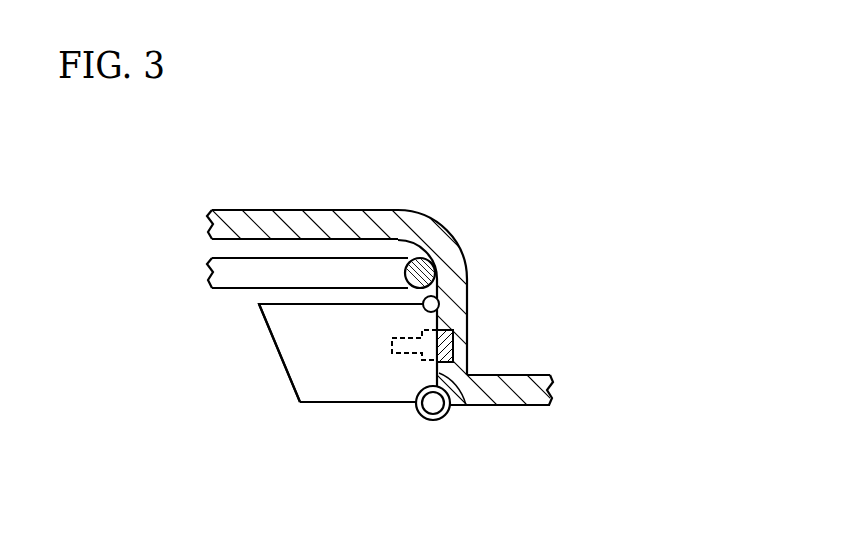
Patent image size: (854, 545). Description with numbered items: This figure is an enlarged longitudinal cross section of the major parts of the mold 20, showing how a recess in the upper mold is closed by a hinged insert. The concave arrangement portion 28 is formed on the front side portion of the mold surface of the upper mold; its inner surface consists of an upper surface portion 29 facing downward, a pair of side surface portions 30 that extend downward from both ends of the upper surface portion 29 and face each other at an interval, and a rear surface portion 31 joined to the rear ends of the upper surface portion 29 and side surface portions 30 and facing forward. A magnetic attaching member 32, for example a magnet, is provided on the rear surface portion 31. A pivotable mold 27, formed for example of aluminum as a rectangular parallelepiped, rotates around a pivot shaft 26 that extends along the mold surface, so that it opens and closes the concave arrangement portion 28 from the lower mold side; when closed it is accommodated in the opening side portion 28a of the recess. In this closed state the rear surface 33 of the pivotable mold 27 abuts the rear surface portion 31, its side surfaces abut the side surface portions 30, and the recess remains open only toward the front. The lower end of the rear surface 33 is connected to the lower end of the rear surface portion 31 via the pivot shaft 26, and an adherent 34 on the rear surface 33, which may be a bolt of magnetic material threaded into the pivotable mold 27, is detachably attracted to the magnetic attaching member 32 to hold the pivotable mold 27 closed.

The display device 20 is at (538, 145).
The pivot shaft 26 is at (433, 404).
The pivotable mold 27 is at (330, 388).
The concave arrangement portion 28 is at (248, 241).
The opening side portion 28a is at (262, 361).
The upper surface portion 29 is at (374, 241).
The side surface portions 30 is at (308, 252).
The rear surface portion 31 is at (440, 306).
The magnetic attaching member 32 is at (453, 346).
The rear surface 33 is at (439, 373).
The adherent 34 is at (407, 353).